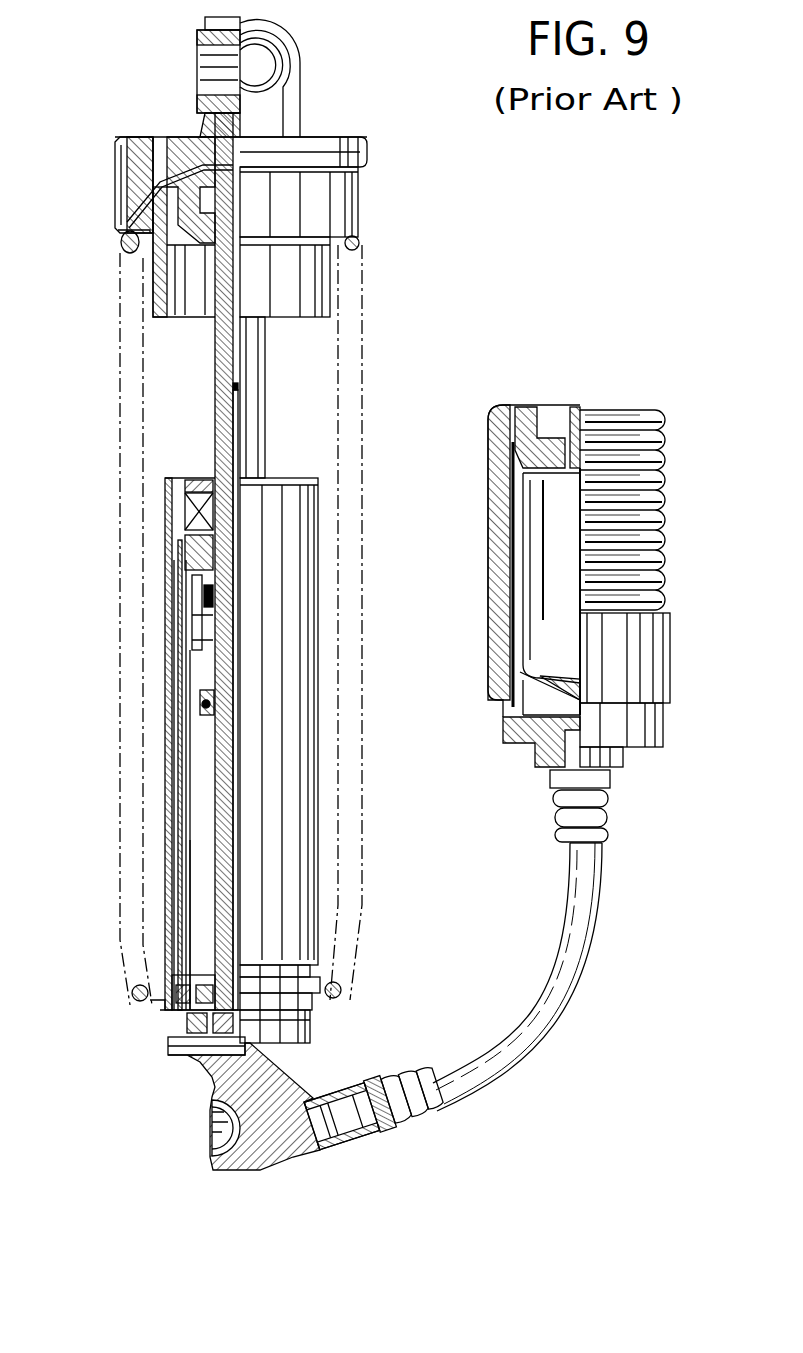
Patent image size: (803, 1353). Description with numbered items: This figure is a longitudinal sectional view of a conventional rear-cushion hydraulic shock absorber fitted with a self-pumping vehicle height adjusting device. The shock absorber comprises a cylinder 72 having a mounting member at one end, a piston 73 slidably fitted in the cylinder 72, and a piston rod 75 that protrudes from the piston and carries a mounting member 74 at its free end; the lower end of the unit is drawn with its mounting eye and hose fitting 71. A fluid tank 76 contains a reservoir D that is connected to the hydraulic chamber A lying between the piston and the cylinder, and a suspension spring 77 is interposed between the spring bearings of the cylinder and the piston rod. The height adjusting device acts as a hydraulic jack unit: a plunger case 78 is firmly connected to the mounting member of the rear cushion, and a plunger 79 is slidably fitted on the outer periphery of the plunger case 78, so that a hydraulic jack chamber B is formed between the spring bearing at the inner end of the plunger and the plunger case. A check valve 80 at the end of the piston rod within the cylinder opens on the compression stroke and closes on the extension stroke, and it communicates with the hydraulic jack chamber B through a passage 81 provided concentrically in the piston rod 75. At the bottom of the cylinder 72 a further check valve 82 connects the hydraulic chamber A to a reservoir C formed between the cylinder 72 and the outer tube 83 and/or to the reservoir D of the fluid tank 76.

The lower end member with eye and hose fitting 71 is at (212, 1077).
The cylinder 72 is at (170, 777).
The piston 73 is at (170, 638).
The mounting member 74 is at (198, 147).
The piston rod 75 is at (216, 392).
The fluid tank 76 is at (490, 705).
The suspension spring 77 is at (118, 513).
The plunger case 78 is at (150, 140).
The plunger 79 is at (121, 172).
The check valve 80 is at (240, 706).
The passage 81 is at (240, 548).
The check valve 82 is at (168, 988).
The outer tube 83 is at (165, 838).
The hydraulic chamber A is at (222, 899).
The hydraulic jack chamber B is at (121, 188).
The reservoir C is at (170, 883).
The reservoir D is at (545, 709).